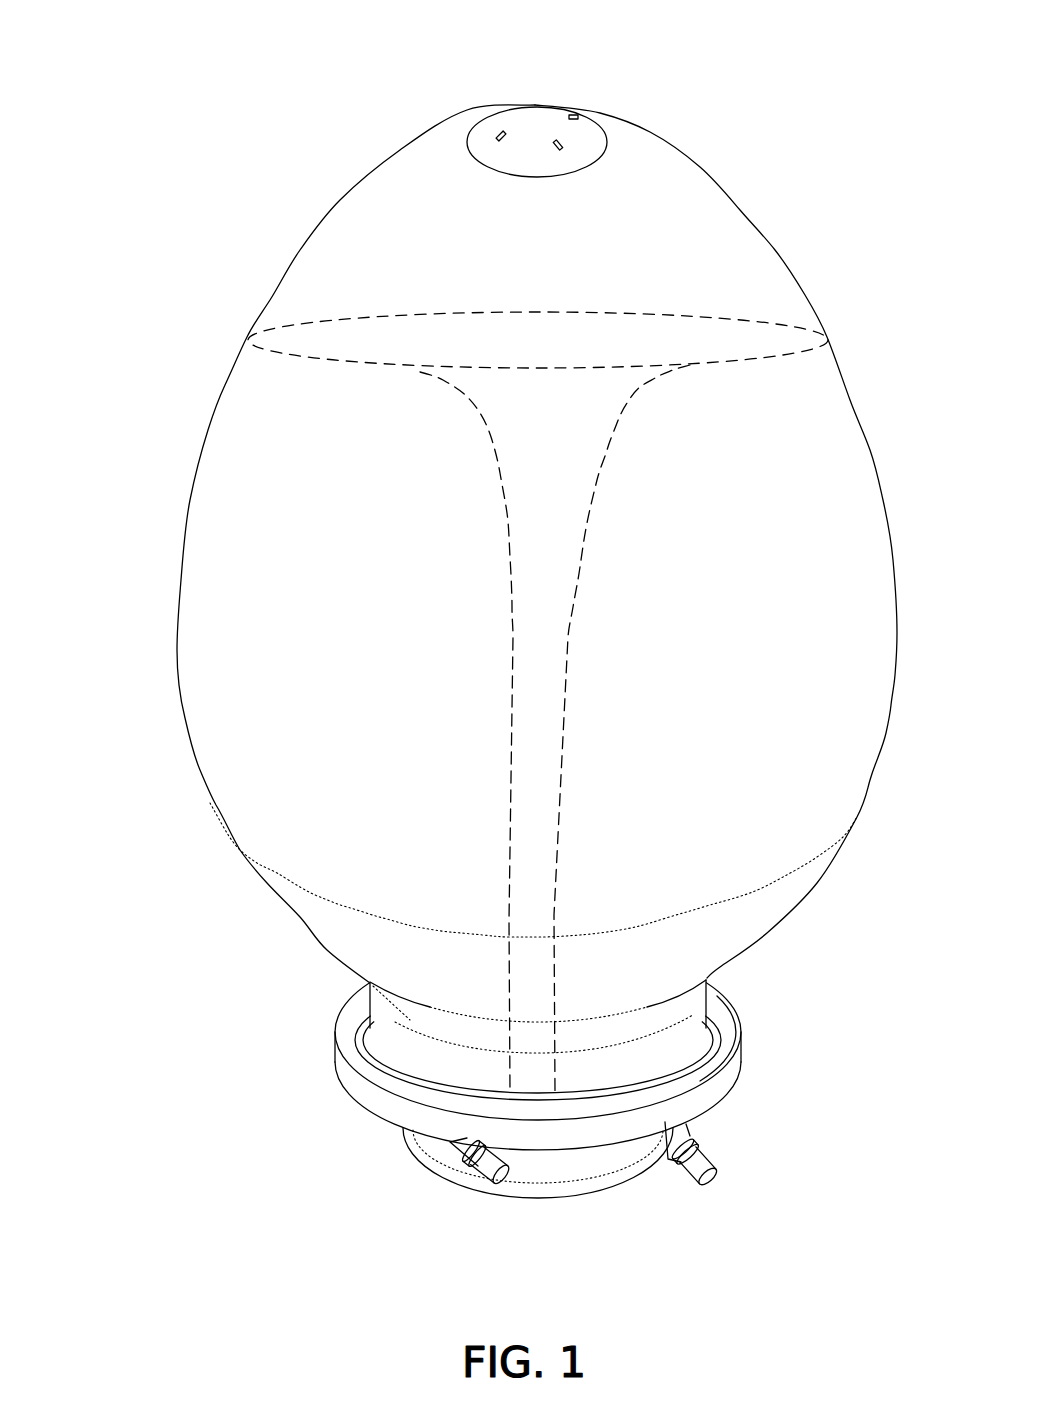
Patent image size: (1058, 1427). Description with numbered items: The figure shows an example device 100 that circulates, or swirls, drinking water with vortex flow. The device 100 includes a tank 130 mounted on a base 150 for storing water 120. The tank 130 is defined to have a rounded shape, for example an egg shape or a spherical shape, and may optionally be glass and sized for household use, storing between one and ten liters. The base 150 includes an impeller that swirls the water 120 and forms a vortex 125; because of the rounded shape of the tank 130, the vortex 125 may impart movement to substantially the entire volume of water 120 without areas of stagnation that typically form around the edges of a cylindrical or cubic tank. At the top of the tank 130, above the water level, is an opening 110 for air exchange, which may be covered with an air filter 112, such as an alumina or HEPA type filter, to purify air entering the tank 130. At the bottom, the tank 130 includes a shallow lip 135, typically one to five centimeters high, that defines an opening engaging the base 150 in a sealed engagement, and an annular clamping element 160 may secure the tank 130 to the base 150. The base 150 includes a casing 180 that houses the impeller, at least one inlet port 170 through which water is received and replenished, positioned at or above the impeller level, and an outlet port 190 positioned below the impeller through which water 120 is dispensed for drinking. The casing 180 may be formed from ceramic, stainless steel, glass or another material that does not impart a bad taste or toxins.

The device 100 is at (473, 659).
The opening 110 is at (469, 91).
The air filter 112 is at (537, 115).
The water 120 is at (354, 531).
The vortex 125 is at (350, 318).
The tank 130 is at (208, 430).
The lip 135 is at (410, 1022).
The base 150 is at (443, 1128).
The annular clamping element 160 is at (364, 1089).
The inlet port 170 is at (466, 1156).
The casing 180 is at (567, 1171).
The outlet port 190 is at (676, 1164).